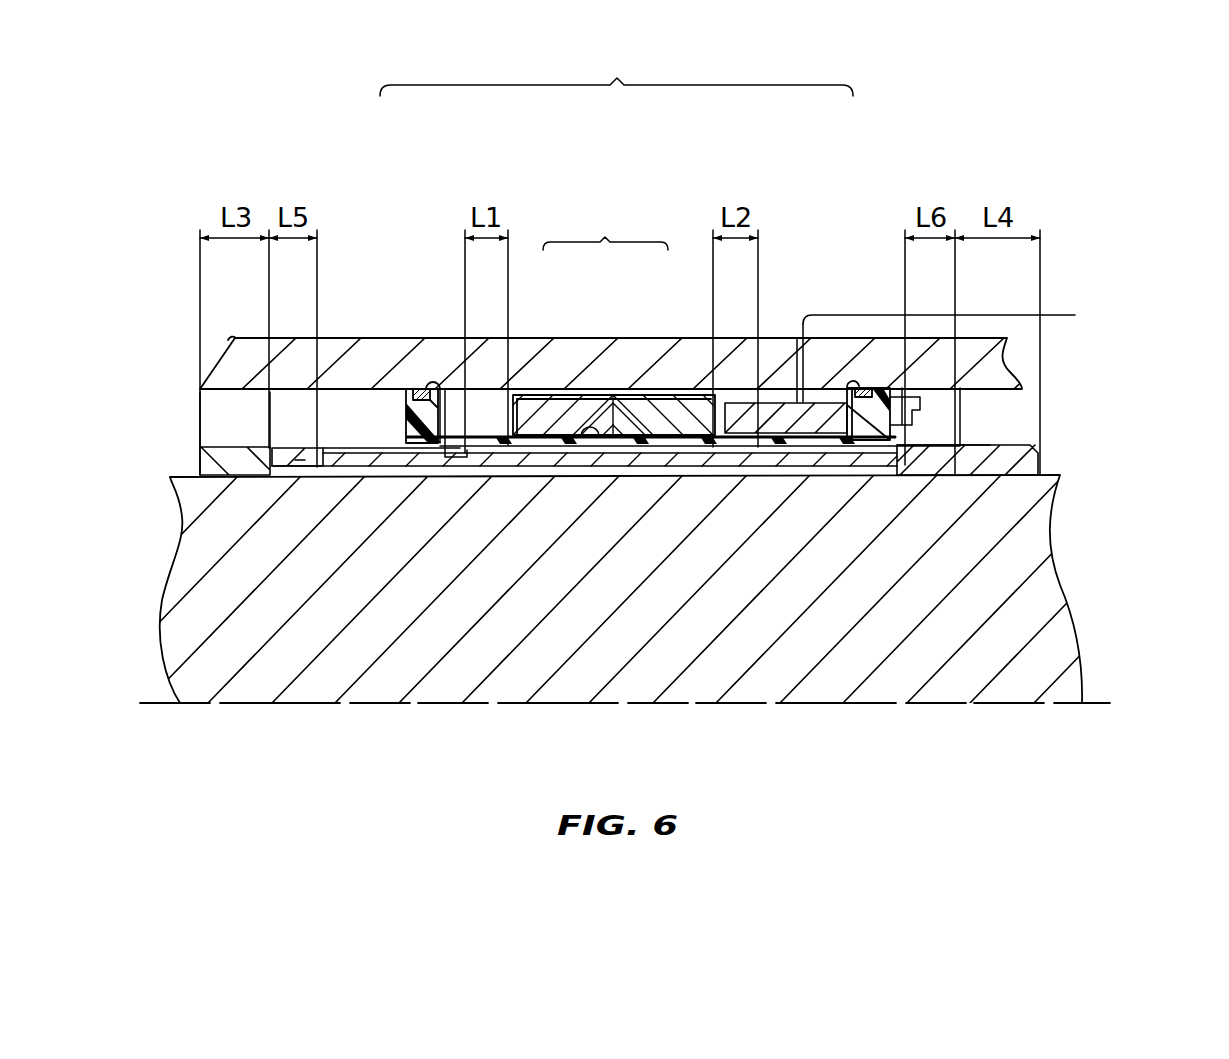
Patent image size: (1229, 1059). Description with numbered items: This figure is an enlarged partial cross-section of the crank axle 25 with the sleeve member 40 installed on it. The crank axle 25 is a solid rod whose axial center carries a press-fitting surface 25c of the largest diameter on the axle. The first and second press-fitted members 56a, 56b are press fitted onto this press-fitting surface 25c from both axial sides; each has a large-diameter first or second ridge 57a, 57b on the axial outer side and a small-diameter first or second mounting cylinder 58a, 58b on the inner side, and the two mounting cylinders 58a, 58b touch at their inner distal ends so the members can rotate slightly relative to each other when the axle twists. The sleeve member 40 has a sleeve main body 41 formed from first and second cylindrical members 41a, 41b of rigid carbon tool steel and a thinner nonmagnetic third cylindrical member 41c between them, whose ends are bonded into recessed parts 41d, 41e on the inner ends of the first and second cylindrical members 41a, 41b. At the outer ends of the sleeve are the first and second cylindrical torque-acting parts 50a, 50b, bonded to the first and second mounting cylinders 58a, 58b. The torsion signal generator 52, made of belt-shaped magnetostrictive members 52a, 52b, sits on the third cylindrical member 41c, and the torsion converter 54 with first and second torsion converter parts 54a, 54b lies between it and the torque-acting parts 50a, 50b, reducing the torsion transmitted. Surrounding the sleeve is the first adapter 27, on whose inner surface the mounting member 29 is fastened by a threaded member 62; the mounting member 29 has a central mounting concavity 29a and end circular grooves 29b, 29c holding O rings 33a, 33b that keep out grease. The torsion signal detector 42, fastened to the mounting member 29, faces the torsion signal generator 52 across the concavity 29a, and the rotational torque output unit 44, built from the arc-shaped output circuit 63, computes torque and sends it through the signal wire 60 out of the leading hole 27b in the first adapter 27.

The crank axle 25 is at (1064, 585).
The press-fitting surface 25c is at (178, 473).
The first adapter 27 is at (1012, 362).
The leading hole 27b is at (787, 402).
The mounting member 29 is at (718, 437).
The mounting concavity 29a is at (590, 450).
The circular groove 29b is at (458, 455).
The circular groove 29c is at (855, 457).
The O ring 33a is at (860, 388).
The O ring 33b is at (416, 390).
The sleeve member 40 is at (937, 434).
The sleeve main body 41 is at (287, 472).
The first cylindrical member 41a is at (458, 467).
The second cylindrical member 41b is at (770, 400).
The third cylindrical member 41c is at (538, 470).
The recessed part 41d is at (522, 455).
The recessed part 41e is at (718, 437).
The torsion signal detector 42 is at (614, 341).
The rotational torque output unit 44 is at (805, 455).
The first cylindrical torque-acting part 50a is at (300, 457).
The second cylindrical torque-acting part 50b is at (937, 457).
The torsion signal generator 52 is at (605, 226).
The magnetostrictive member 52a is at (577, 400).
The magnetostrictive member 52b is at (660, 425).
The torsion converter 54 is at (616, 69).
The first torsion converter part 54a is at (455, 457).
The second torsion converter part 54b is at (835, 386).
The first press-fitted member 56a is at (220, 435).
The second press-fitted member 56b is at (1008, 438).
The first ridge 57a is at (217, 467).
The second ridge 57b is at (1030, 458).
The first mounting cylinder 58a is at (355, 467).
The second mounting cylinder 58b is at (700, 457).
The signal wire 60 is at (1057, 305).
The threaded member 62 is at (907, 386).
The output circuit 63 is at (833, 457).